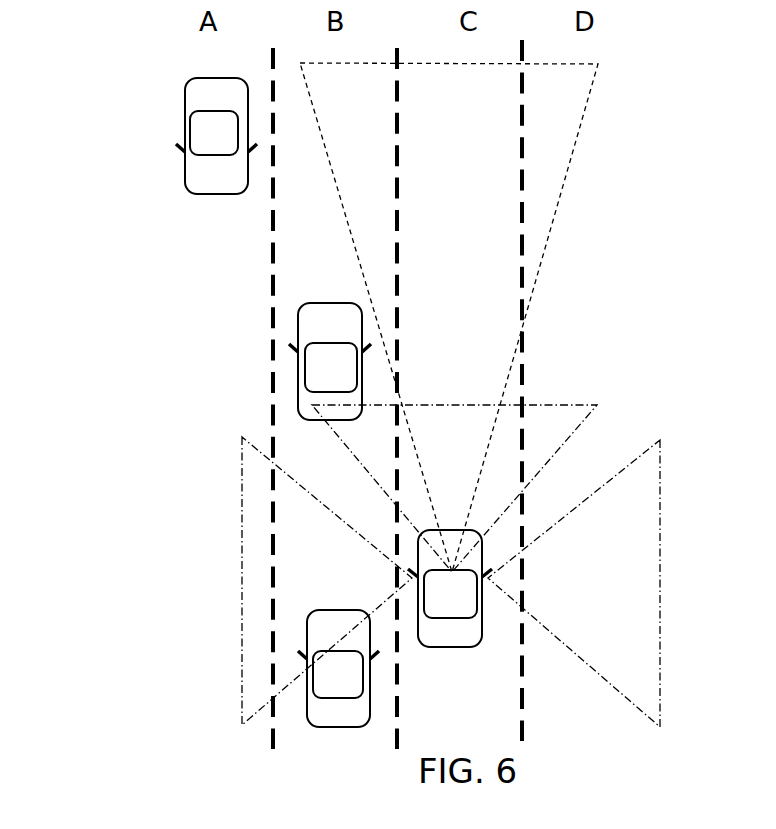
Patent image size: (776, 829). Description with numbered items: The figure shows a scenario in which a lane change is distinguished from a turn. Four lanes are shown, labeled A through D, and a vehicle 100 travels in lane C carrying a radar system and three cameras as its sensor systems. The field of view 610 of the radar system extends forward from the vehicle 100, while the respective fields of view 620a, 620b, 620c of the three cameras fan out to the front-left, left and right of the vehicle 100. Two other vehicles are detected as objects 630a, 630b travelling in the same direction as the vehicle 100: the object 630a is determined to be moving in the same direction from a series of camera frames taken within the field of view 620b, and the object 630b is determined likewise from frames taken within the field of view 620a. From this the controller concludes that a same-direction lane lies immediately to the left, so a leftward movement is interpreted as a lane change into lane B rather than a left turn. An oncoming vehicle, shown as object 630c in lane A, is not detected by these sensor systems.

The vehicle 100 is at (445, 650).
The field of view of the radar system 610 is at (590, 145).
The field of view of a camera 620a is at (567, 410).
The field of view of a camera 620b is at (240, 540).
The field of view of a camera 620c is at (660, 548).
The object 630a is at (337, 727).
The object 630b is at (302, 370).
The object 630c is at (187, 182).